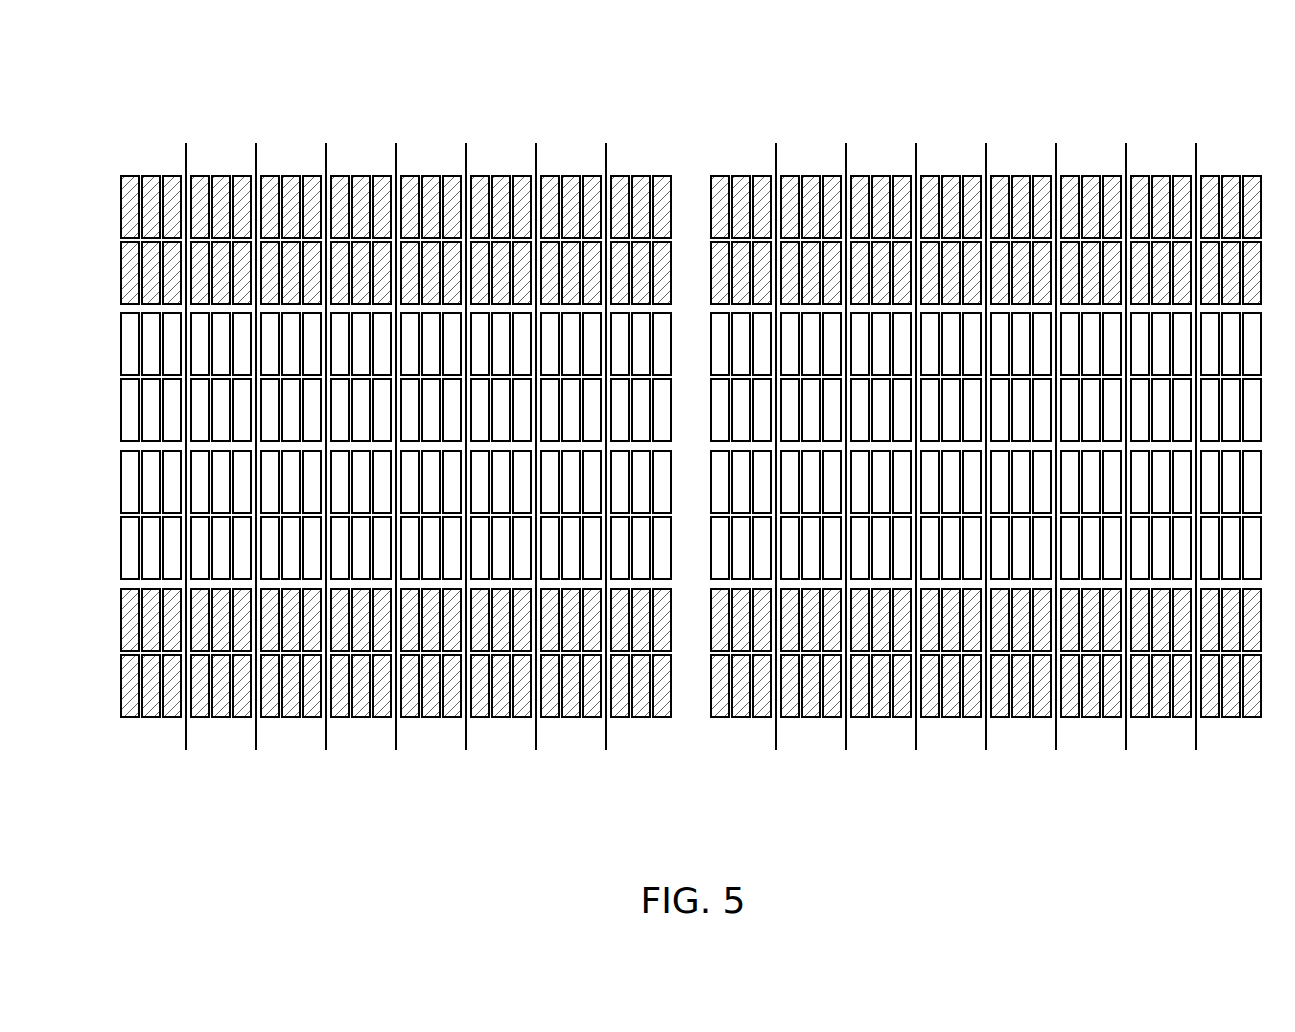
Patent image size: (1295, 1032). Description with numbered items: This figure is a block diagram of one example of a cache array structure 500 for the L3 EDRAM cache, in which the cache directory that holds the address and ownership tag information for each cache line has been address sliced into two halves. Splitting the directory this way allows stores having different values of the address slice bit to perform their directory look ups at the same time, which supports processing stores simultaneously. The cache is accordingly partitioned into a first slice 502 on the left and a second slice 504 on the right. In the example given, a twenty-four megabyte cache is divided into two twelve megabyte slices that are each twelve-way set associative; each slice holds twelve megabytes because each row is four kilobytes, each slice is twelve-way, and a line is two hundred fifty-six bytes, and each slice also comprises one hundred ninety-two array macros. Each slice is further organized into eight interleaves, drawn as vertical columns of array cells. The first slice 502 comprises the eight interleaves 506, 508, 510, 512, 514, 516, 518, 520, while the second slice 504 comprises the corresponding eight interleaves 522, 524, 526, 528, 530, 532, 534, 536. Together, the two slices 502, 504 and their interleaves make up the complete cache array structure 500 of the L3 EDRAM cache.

The cache array structure 500 is at (672, 117).
The first slice 502 is at (383, 442).
The second slice 504 is at (990, 442).
The interleave 506 is at (145, 493).
The interleave 508 is at (215, 493).
The interleave 510 is at (285, 493).
The interleave 512 is at (355, 493).
The interleave 514 is at (425, 493).
The interleave 516 is at (495, 493).
The interleave 518 is at (565, 493).
The interleave 520 is at (635, 493).
The interleave 522 is at (735, 493).
The interleave 524 is at (805, 493).
The interleave 526 is at (875, 493).
The interleave 528 is at (945, 493).
The interleave 530 is at (1015, 493).
The interleave 532 is at (1085, 493).
The interleave 534 is at (1155, 493).
The interleave 536 is at (1225, 493).